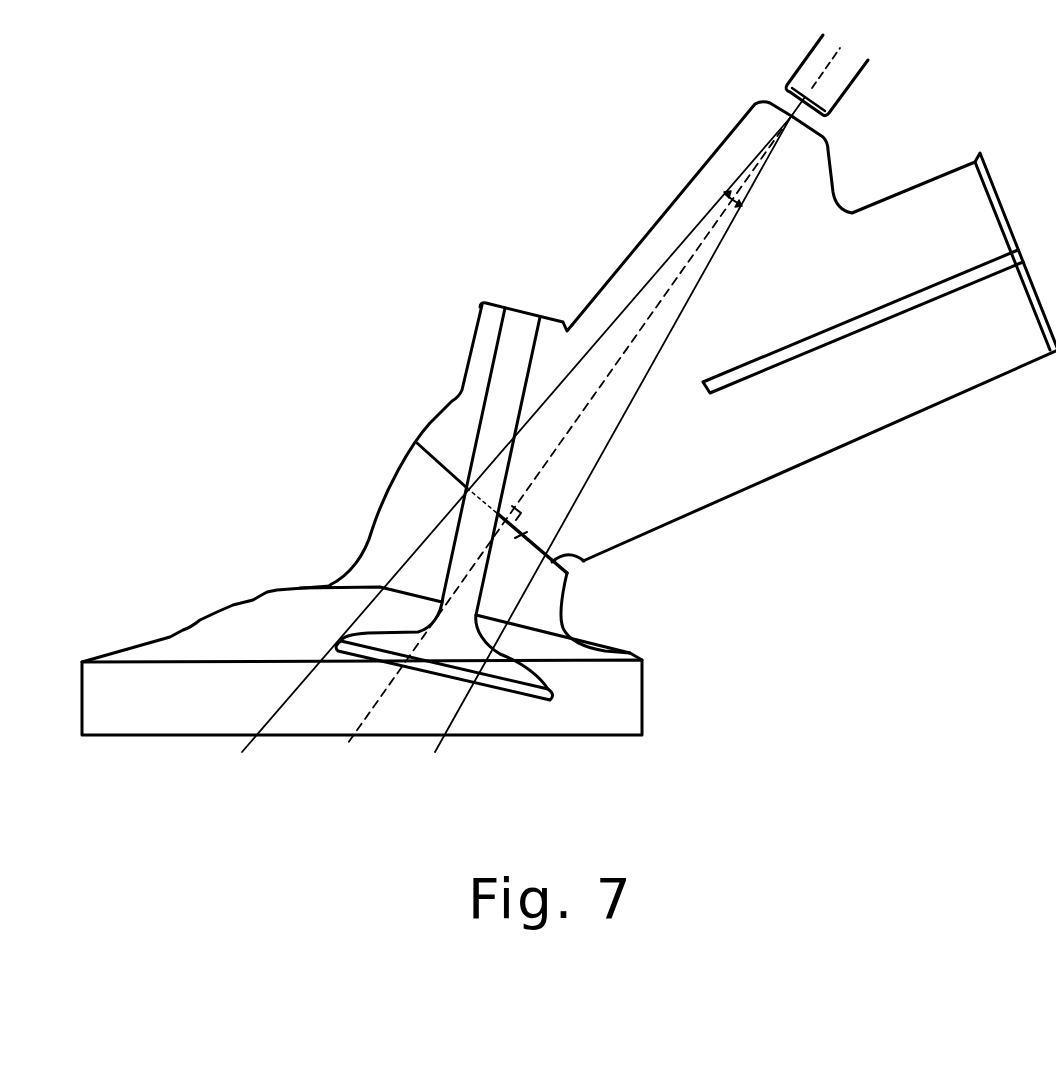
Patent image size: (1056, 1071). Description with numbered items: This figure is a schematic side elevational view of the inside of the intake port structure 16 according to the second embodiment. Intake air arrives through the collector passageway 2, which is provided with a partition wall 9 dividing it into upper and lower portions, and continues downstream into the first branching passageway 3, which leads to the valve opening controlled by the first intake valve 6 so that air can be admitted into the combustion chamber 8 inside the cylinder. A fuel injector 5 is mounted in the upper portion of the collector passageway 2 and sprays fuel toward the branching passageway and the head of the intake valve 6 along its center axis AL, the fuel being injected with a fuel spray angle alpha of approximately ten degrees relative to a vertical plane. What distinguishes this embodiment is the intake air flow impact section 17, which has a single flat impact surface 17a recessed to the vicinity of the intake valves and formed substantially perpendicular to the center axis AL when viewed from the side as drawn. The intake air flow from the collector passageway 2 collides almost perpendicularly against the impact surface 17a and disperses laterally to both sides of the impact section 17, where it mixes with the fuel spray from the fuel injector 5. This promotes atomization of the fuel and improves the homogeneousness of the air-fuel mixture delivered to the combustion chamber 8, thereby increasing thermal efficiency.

The collector passageway 2 is at (833, 447).
The first branching passageway 3 is at (402, 485).
The fuel injector 5 is at (847, 84).
The first intake valve 6 is at (493, 672).
The combustion chamber 8 is at (312, 712).
The partition wall 9 is at (888, 318).
The intake port structure 16 is at (627, 246).
The intake air flow impact section 17 is at (527, 533).
The flat impact surface 17a is at (584, 561).
The center axis AL is at (820, 75).
The fuel spray angle alpha is at (736, 212).